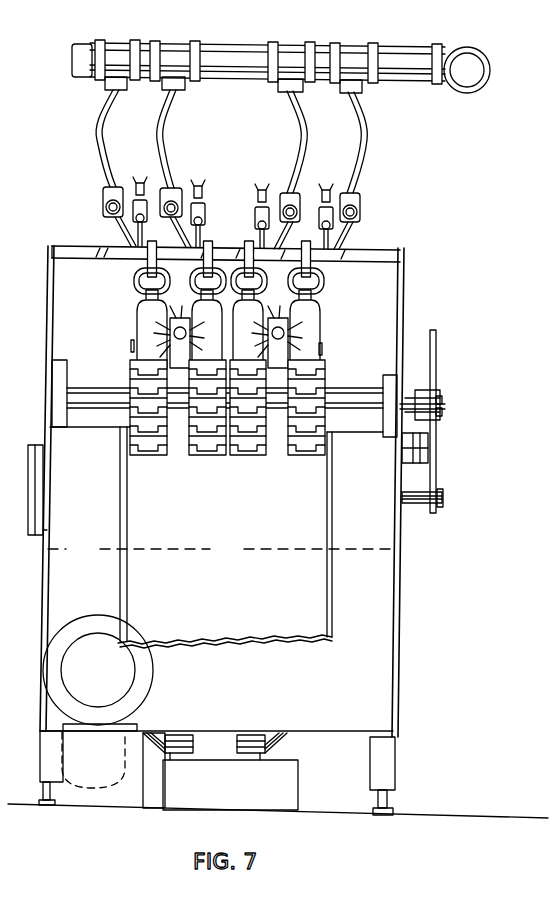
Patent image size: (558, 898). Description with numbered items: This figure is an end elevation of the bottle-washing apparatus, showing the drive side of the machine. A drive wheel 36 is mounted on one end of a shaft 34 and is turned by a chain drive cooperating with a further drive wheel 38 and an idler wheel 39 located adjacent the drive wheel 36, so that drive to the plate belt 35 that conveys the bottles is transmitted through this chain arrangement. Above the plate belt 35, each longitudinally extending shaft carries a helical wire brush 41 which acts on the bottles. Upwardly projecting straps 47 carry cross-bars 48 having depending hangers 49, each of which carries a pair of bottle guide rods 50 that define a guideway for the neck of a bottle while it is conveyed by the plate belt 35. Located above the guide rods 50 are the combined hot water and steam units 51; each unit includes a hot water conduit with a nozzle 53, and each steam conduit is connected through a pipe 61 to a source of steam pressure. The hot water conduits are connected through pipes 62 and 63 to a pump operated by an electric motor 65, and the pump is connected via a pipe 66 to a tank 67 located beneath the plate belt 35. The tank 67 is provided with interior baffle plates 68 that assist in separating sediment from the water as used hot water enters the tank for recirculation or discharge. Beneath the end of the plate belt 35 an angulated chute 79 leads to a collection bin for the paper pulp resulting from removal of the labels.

The shaft 34 is at (341, 402).
The plate belt 35 is at (132, 420).
The drive wheel 36 is at (433, 345).
The further drive wheel 38 is at (441, 490).
The idler wheel 39 is at (434, 442).
The helical wire brush 41 is at (168, 320).
The upwardly projecting straps 47 is at (50, 326).
The cross-bars 48 is at (62, 247).
The hangers 49 is at (208, 246).
The bottle guide rods 50 is at (136, 290).
The combined hot water and steam units 51 is at (372, 212).
The nozzle 53 is at (121, 226).
The pipe 61 is at (148, 185).
The pipe 62 is at (98, 122).
The pipe 63 is at (468, 47).
The electric motor 65 is at (95, 628).
The pipe 66 is at (60, 750).
The tank 67 is at (96, 551).
The baffle plates 68 is at (310, 551).
The angulated chute 79 is at (240, 561).